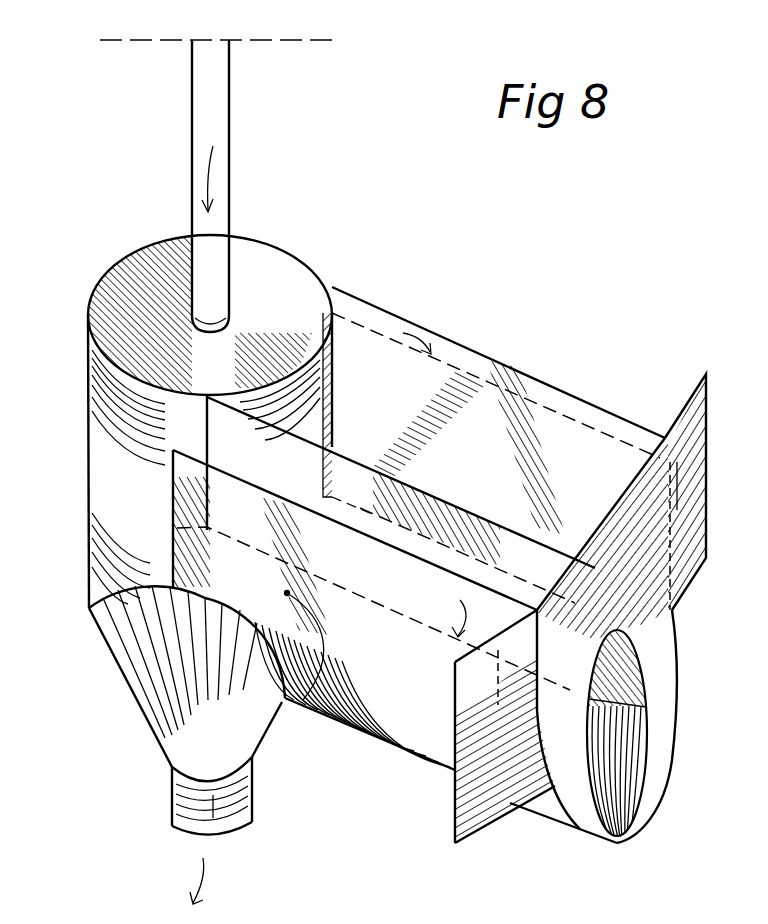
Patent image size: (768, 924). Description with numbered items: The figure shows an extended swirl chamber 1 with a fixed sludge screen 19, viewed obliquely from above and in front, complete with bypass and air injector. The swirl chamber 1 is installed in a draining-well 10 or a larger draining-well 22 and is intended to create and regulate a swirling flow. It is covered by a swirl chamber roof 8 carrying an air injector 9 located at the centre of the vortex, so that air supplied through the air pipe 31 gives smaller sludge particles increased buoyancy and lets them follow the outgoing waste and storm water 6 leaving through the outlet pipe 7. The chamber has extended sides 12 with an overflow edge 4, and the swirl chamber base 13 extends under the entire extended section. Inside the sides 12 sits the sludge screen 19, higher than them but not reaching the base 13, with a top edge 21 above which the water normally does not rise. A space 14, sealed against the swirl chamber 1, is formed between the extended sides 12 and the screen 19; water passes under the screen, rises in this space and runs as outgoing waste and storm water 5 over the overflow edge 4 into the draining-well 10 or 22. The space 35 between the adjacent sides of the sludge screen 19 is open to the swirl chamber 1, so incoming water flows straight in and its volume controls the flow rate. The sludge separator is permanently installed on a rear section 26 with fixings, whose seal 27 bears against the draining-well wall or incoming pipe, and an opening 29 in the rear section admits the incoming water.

The swirl chamber 1 is at (89, 475).
The overflow edge 4 is at (604, 437).
The outgoing waste and storm water 5 is at (403, 333).
The outgoing waste and storm water 6 is at (203, 858).
The outlet pipe 7 is at (244, 792).
The swirl chamber roof 8 is at (135, 288).
The air injector 9 is at (213, 318).
The draining-well 10 is at (290, 108).
The swirl chamber extended sides 12 is at (452, 388).
The swirl chamber base 13 is at (383, 743).
The space 14 is at (123, 524).
The sludge screen 19 is at (520, 433).
The top edge of sludge screen 21 is at (472, 353).
The draining-well 22 is at (407, 126).
The rear section 26 is at (705, 422).
The seal 27 is at (657, 772).
The opening 29 is at (645, 697).
The air pipe 31 is at (213, 118).
The space 35 is at (620, 562).